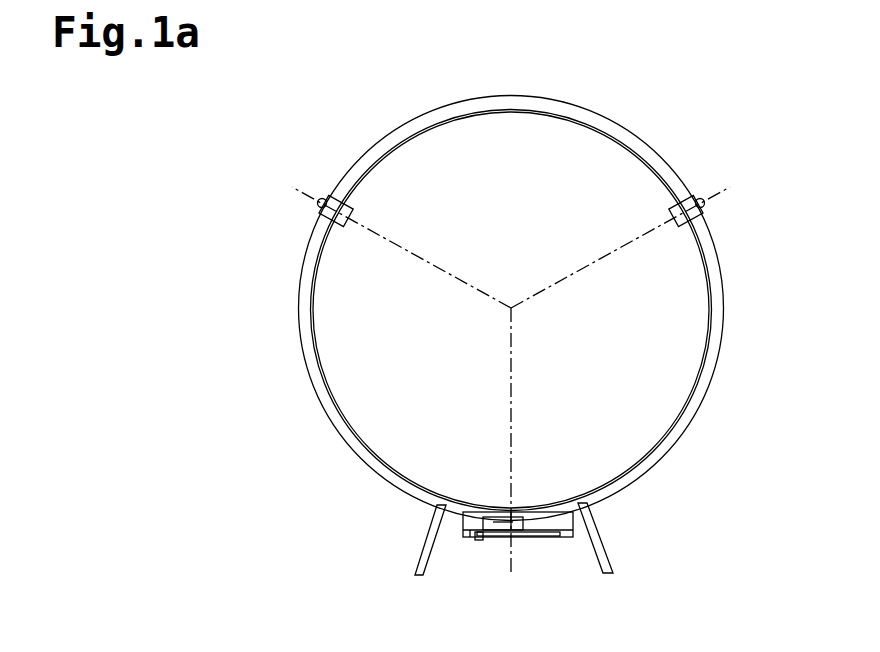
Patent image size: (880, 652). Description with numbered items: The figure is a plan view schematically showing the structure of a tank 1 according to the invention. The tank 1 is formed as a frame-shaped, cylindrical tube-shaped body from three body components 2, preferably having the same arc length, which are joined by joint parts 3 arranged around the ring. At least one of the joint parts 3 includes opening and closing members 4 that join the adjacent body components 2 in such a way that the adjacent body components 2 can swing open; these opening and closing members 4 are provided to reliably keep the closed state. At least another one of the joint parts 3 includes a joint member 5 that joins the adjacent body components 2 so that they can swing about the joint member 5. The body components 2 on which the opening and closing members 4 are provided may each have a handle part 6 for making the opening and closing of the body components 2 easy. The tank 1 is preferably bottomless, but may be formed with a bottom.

The tank 1 is at (634, 106).
The body component 2 is at (526, 100).
The joint part 3 is at (315, 216).
The opening and closing member 4 is at (498, 540).
The joint member 5 is at (318, 199).
The handle part 6 is at (428, 529).